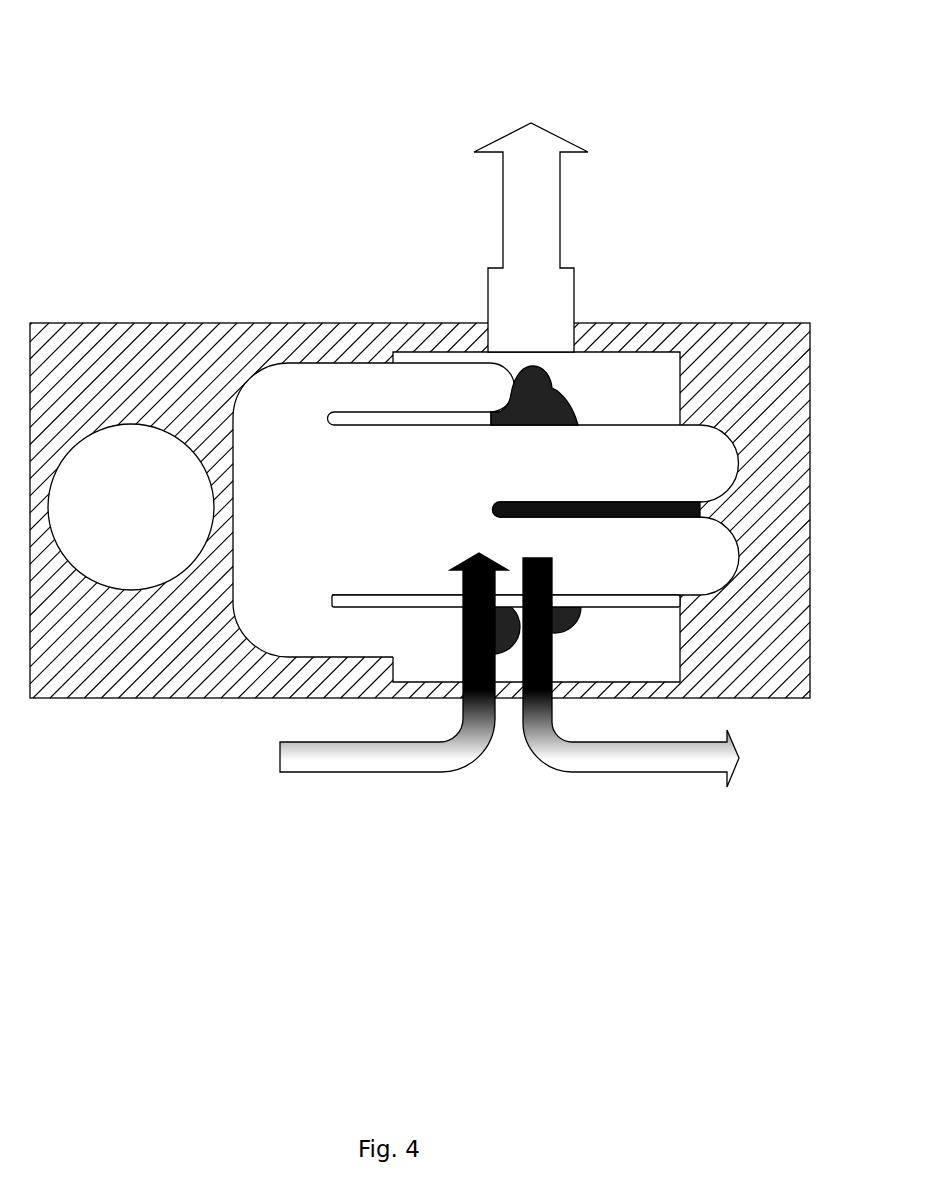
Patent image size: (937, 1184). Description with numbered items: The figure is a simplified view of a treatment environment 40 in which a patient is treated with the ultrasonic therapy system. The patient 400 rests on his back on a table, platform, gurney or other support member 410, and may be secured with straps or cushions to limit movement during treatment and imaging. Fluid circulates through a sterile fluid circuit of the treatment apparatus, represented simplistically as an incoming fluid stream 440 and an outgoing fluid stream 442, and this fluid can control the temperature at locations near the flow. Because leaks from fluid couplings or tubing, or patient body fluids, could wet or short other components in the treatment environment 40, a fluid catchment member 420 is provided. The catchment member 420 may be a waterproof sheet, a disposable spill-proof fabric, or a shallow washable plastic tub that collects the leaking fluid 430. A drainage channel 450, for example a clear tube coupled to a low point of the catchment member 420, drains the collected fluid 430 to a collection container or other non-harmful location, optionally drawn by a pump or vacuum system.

The treatment environment 40 is at (160, 115).
The patient 400 is at (277, 382).
The support member 410 is at (809, 373).
The fluid catchment member 420 is at (678, 382).
The leaking fluid 430 is at (548, 388).
The incoming fluid stream 440 is at (365, 662).
The outgoing fluid stream 442 is at (655, 672).
The drainage channel 450 is at (487, 308).